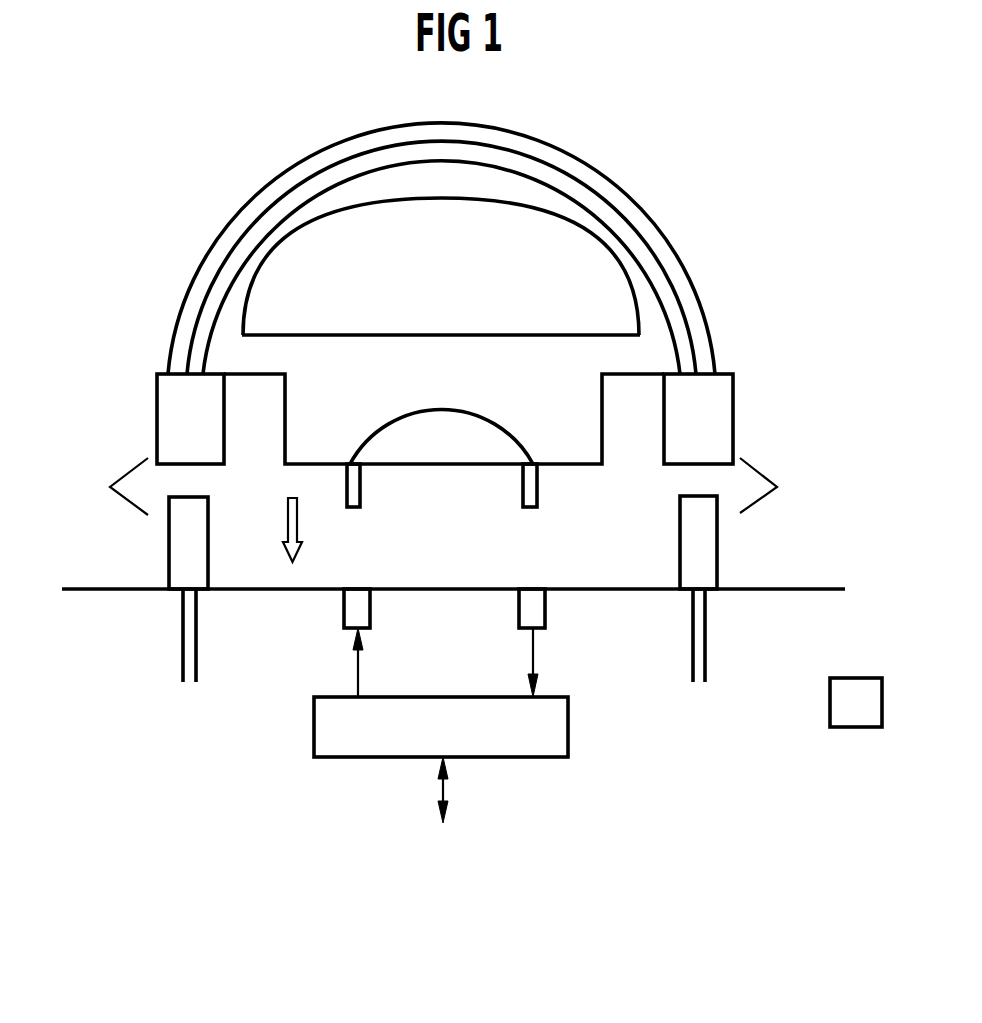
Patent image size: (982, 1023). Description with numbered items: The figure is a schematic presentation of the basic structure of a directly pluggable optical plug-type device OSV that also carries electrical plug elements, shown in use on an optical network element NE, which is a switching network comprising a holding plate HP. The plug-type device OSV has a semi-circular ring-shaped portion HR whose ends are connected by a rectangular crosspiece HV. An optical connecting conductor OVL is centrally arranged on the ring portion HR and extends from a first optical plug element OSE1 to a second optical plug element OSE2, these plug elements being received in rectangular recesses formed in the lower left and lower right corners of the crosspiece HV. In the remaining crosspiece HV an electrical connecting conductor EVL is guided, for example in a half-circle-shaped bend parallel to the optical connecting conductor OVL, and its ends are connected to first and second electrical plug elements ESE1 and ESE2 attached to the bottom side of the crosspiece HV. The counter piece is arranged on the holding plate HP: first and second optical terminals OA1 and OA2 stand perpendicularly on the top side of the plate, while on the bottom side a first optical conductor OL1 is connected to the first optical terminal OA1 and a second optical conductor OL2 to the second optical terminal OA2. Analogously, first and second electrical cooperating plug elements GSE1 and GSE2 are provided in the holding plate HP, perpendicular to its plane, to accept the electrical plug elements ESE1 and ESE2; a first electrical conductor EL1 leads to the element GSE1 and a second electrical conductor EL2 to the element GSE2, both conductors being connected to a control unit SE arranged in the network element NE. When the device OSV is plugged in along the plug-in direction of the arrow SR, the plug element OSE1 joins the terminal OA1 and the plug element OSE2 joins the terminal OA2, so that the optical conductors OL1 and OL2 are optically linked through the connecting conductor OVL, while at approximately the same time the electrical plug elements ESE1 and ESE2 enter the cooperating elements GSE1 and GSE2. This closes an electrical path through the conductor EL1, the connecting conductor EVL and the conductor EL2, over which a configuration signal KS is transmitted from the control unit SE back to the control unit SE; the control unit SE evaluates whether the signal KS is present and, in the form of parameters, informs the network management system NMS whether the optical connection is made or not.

The optical connecting conductor OVL is at (298, 190).
The optical plug-type device OSV is at (600, 167).
The semi-circular ring-shaped portion HR is at (498, 183).
The rectangular crosspiece HV is at (367, 342).
The electrical connecting conductor EVL is at (443, 408).
The first optical plug element OSE1 is at (157, 410).
The second optical plug element OSE2 is at (733, 417).
The first electrical plug element ESE1 is at (360, 485).
The second electrical plug element ESE2 is at (537, 487).
The plug-in direction arrow SR is at (275, 528).
The first optical terminal OA1 is at (169, 550).
The second optical terminal OA2 is at (717, 540).
The holding plate HP is at (471, 585).
The first electrical cooperating plug element GSE1 is at (344, 601).
The second electrical cooperating plug element GSE2 is at (545, 601).
The first optical conductor OL1 is at (183, 648).
The second optical conductor OL2 is at (705, 636).
The first electrical conductor EL1 is at (357, 666).
The second electrical conductor EL2 is at (533, 655).
The configuration signal KS is at (442, 674).
The control unit SE is at (441, 727).
The network management system NMS is at (440, 809).
The optical network element NE is at (856, 702).